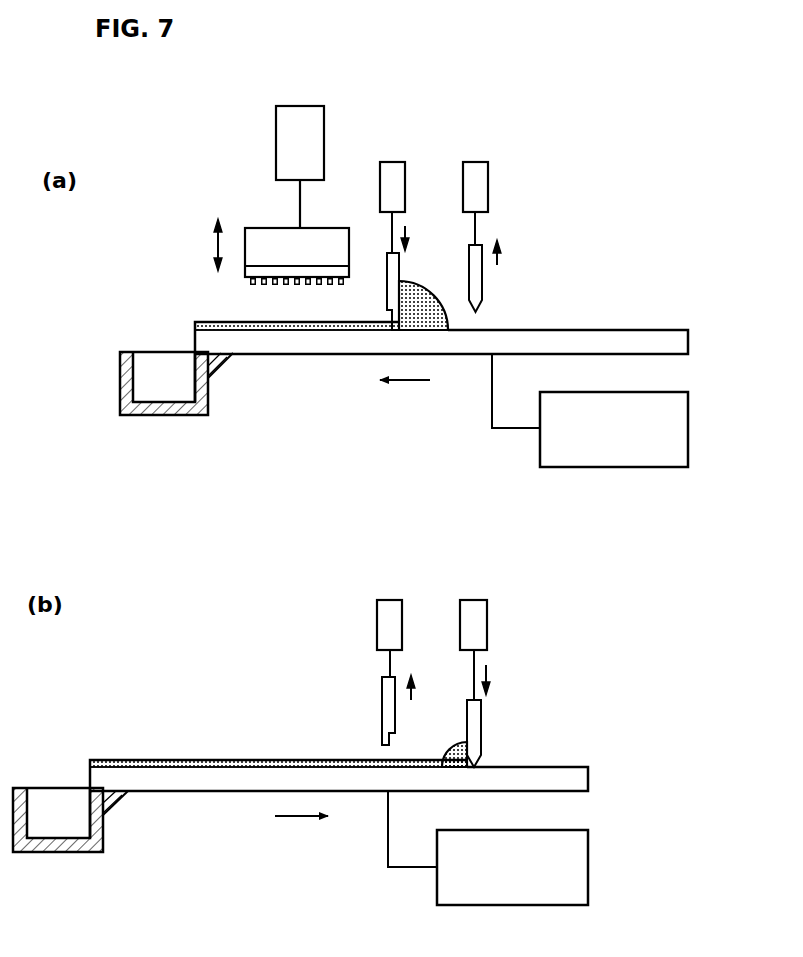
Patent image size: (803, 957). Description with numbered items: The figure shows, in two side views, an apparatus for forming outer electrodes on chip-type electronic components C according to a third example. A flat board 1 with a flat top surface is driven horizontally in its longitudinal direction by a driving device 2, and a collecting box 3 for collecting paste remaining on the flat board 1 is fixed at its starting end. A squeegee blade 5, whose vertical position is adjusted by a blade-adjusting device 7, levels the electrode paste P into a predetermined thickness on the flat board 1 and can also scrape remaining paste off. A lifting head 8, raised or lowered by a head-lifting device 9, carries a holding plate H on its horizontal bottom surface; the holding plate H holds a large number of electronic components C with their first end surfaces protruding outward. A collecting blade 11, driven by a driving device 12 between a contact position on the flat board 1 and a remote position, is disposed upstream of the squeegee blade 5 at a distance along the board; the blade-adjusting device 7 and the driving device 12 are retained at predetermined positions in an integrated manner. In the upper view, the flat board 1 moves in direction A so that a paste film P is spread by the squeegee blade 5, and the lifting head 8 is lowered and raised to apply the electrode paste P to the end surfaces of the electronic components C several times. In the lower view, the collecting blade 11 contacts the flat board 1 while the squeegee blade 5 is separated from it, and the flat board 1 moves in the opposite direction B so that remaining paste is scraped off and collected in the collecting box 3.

The flat board 1 is at (305, 355).
The driving device 2 is at (612, 468).
The collecting box 3 is at (164, 416).
The squeegee blade 5 is at (387, 281).
The blade-adjusting device 7 is at (394, 172).
The lifting head 8 is at (270, 232).
The head-lifting device 9 is at (280, 130).
The collecting blade 11 is at (482, 290).
The driving device 12 is at (478, 172).
The spreading direction A is at (400, 382).
The direction opposite to the spreading direction B is at (300, 818).
The chip-type electronic components C is at (320, 286).
The holding plate H is at (313, 264).
The electrode paste P is at (426, 298).